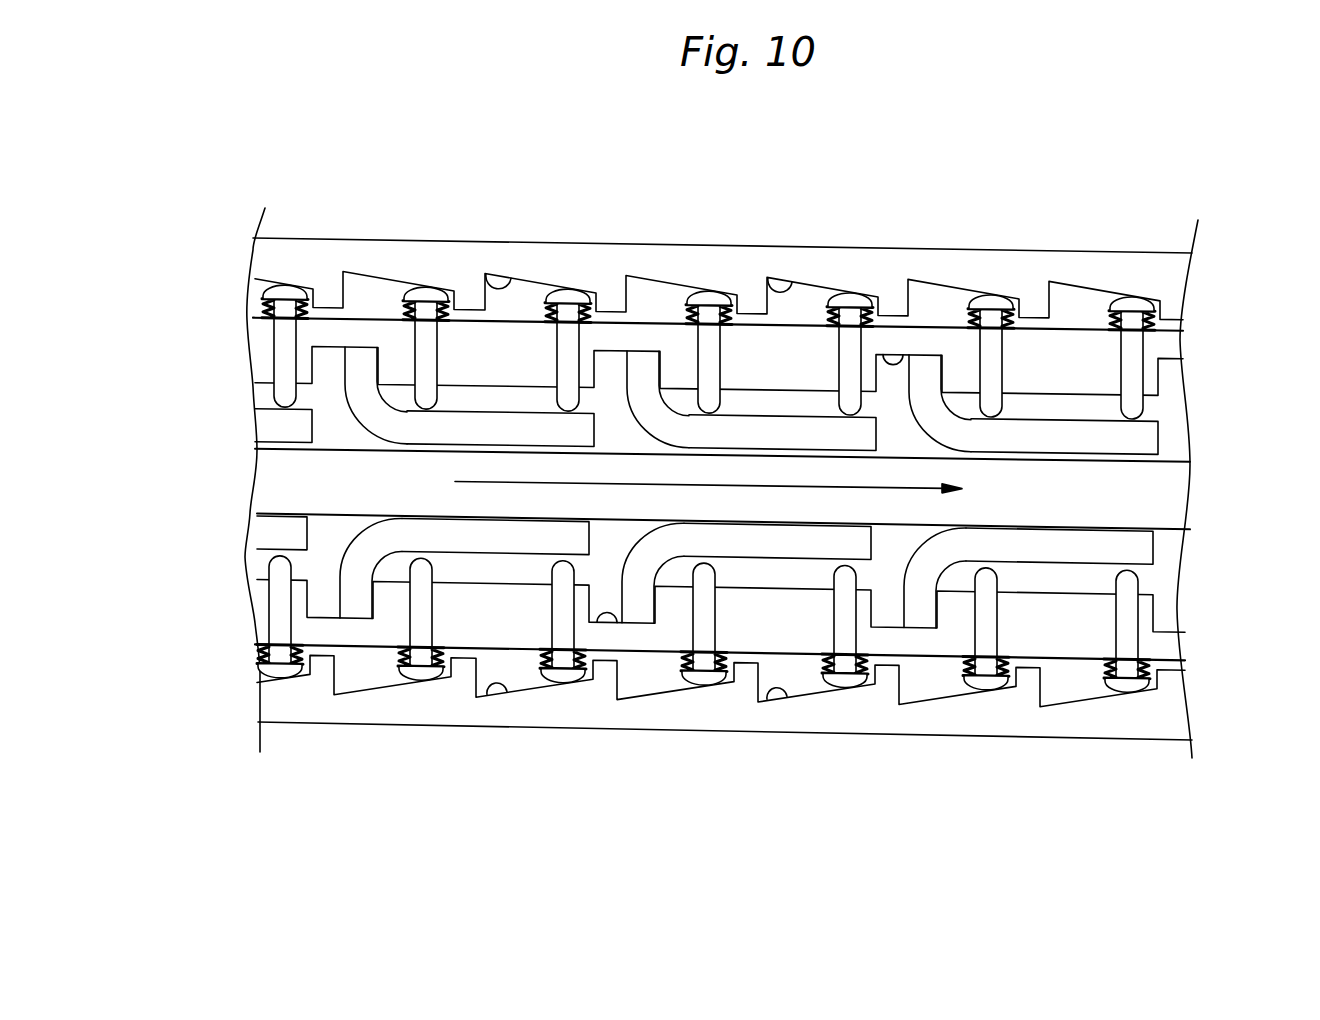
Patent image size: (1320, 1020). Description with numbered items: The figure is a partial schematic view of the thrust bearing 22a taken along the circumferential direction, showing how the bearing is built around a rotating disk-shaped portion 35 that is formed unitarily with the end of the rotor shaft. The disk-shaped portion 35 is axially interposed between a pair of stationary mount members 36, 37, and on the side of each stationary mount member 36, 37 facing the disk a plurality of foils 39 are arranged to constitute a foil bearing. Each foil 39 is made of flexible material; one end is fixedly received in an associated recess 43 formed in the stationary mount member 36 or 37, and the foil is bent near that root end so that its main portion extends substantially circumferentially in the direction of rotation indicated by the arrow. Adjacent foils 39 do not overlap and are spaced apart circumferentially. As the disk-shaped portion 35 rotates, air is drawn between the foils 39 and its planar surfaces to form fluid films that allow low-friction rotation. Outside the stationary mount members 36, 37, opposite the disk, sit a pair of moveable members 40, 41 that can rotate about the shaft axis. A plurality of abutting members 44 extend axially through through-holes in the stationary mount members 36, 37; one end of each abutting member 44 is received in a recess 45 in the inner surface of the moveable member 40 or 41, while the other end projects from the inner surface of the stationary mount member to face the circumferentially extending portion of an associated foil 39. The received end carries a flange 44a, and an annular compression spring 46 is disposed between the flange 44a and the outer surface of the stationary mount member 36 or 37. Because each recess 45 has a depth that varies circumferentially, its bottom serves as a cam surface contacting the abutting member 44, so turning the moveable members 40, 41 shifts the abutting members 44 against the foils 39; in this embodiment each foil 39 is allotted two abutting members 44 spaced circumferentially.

The thrust bearing 22a is at (1081, 150).
The disk-shaped portion 35 is at (1013, 508).
The stationary mount member 36 is at (1067, 352).
The stationary mount member 37 is at (1071, 642).
The foil 39 is at (380, 536).
The moveable member 40 is at (381, 250).
The moveable member 41 is at (328, 712).
The recess 43 is at (893, 352).
The abutting member 44 is at (708, 354).
The flange 44a is at (850, 296).
The recess 45 is at (489, 274).
The annular compression spring 46 is at (552, 312).